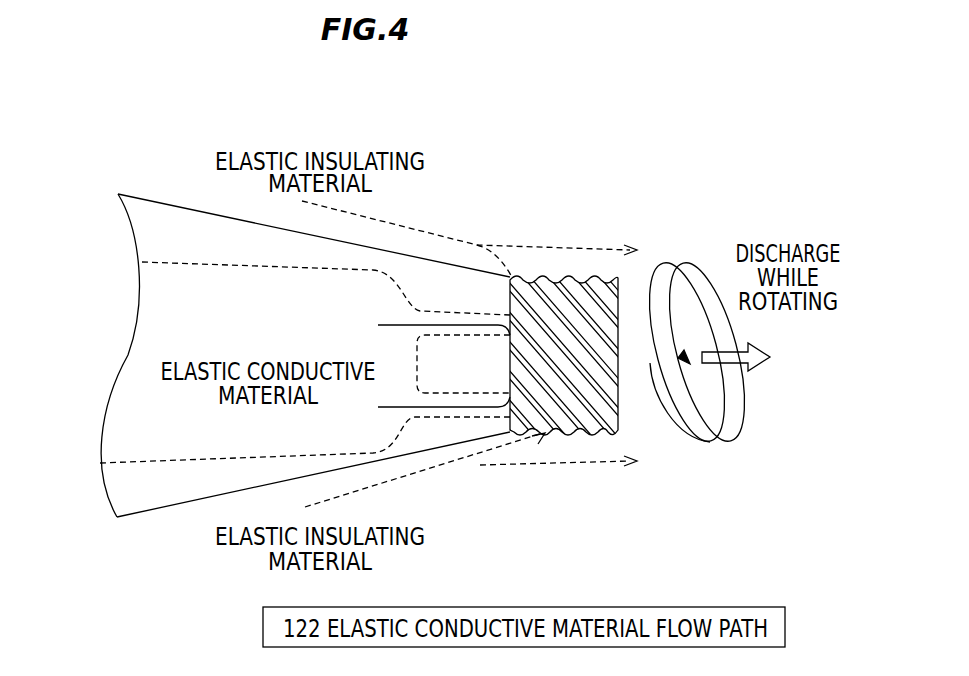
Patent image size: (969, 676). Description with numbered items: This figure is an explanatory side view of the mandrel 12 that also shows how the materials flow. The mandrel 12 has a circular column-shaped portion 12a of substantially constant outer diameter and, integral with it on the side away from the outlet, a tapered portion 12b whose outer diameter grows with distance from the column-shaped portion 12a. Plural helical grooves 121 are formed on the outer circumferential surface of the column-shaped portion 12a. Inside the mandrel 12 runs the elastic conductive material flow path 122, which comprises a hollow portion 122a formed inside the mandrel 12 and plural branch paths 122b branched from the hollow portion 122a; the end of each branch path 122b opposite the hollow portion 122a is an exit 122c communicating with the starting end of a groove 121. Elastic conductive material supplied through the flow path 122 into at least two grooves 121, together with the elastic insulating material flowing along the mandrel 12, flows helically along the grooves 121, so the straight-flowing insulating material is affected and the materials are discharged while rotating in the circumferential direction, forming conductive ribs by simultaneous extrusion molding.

The mandrel 12 is at (177, 140).
The column-shaped portion 12a is at (623, 420).
The tapered portion 12b is at (120, 505).
The helical groove 121 is at (573, 423).
The elastic conductive material flow path 122 is at (147, 333).
The hollow portion 122a is at (115, 418).
The branch path 122b is at (467, 318).
The exit 122c is at (512, 318).